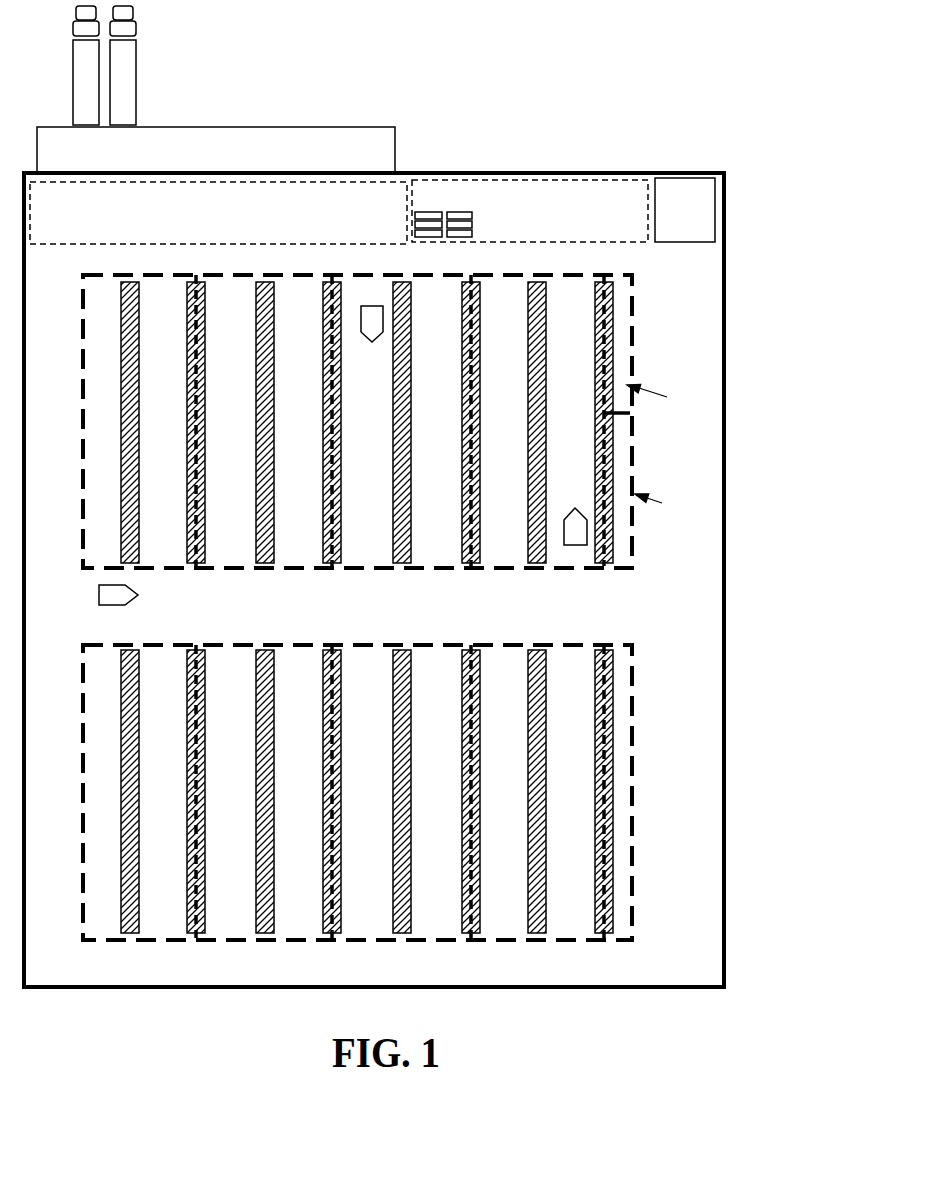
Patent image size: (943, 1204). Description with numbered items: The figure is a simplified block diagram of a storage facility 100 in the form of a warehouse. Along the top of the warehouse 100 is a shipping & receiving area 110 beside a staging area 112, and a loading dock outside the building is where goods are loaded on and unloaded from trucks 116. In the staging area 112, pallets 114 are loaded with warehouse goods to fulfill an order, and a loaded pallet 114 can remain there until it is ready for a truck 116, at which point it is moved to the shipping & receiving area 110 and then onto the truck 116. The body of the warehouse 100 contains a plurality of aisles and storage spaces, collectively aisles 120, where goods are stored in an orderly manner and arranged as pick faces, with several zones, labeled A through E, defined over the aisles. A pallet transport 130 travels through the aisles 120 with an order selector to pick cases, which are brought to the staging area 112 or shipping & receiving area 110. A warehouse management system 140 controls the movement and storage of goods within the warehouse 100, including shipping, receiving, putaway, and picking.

The storage facility 100 is at (756, 134).
The shipping & receiving area 110 is at (392, 236).
The staging area 112 is at (630, 239).
The pallets 114 is at (492, 228).
The trucks 116 is at (177, 80).
The aisles 120 is at (570, 632).
The pallet transport 130 is at (369, 378).
The warehouse management system 140 is at (702, 224).